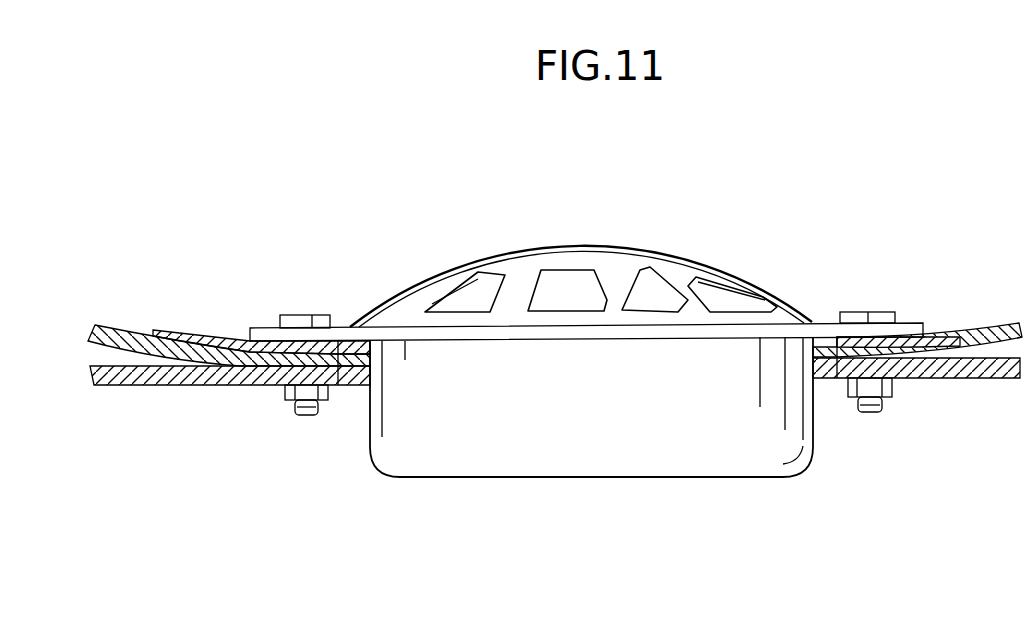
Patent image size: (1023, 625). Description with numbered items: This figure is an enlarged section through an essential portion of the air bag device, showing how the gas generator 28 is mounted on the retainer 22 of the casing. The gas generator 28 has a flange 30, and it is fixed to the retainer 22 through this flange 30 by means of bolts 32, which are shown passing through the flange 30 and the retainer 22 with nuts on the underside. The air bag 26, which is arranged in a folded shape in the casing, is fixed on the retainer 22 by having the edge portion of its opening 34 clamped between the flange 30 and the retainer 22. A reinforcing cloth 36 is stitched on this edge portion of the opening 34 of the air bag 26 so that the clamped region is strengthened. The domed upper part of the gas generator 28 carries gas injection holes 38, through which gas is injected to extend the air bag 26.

The retainer 22 is at (152, 386).
The air bag 26 is at (120, 327).
The gas generator 28 is at (654, 230).
The flange 30 is at (265, 326).
The bolts 32 is at (317, 314).
The opening 34 is at (340, 360).
The reinforcing cloth 36 is at (187, 327).
The gas injection holes 38 is at (560, 242).